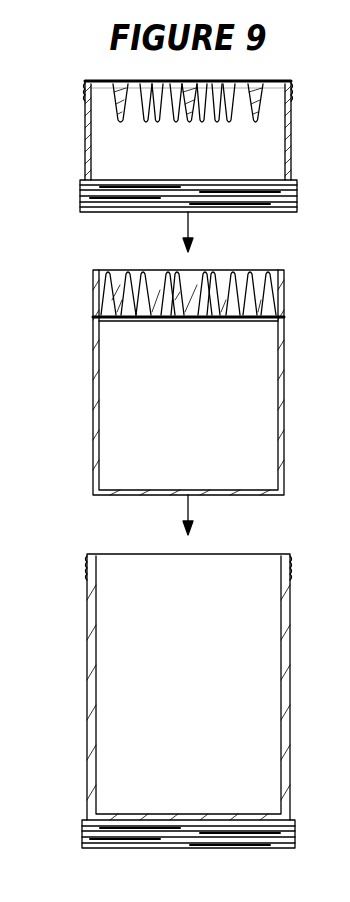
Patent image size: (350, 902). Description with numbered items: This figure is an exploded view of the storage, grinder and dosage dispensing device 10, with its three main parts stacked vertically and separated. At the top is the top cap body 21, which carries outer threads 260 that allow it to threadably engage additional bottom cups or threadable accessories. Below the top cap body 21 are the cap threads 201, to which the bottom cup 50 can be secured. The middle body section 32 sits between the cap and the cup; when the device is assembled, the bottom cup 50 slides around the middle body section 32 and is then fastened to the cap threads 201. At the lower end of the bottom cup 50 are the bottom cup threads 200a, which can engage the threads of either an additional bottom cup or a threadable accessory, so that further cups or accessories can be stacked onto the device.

The storage, grinder and dosage dispensing device 10 is at (50, 76).
The top cap body 21 is at (291, 128).
The outer threads 260 is at (85, 88).
The cap threads 201 is at (90, 205).
The middle body section 32 is at (284, 383).
The bottom cup 50 is at (291, 670).
The bottom cup threads 200a is at (92, 842).